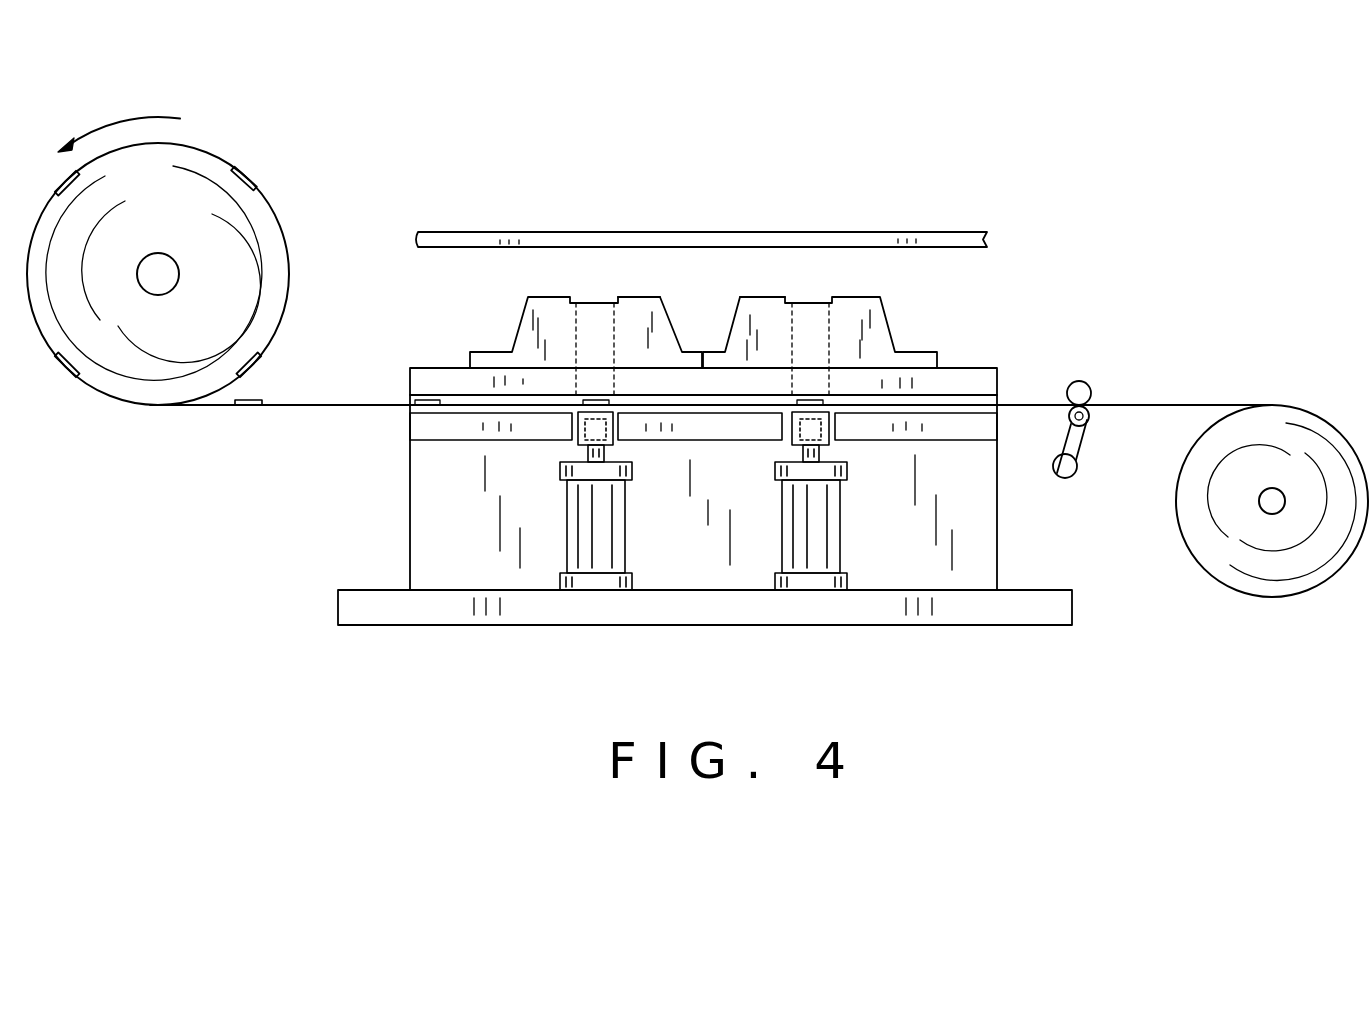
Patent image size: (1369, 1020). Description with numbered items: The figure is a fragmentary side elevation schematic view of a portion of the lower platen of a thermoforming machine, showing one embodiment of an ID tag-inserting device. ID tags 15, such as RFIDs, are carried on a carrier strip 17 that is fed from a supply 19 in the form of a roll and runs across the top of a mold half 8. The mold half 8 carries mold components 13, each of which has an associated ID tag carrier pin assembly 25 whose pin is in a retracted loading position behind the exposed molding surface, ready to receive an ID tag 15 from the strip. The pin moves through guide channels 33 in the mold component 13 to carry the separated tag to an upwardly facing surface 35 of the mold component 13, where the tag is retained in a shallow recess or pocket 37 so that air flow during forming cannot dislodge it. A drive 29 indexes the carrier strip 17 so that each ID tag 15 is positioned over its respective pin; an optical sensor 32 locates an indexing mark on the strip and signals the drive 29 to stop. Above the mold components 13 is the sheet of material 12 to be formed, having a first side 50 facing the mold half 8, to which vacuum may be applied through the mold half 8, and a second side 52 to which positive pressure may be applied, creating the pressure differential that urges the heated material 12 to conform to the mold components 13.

The mold half 8 is at (997, 382).
The material 12 is at (450, 232).
The mold component 13 is at (515, 332).
The ID tag 15 is at (259, 400).
The carrier strip 17 is at (213, 408).
The supply 19 is at (218, 157).
The ID tag carrier pin assembly 25 is at (568, 447).
The drive 29 is at (1216, 573).
The optical sensor 32 is at (1085, 443).
The guide channel 33 is at (578, 326).
The upwardly facing surface 35 is at (748, 297).
The pocket 37 is at (582, 300).
The first side 50 is at (456, 247).
The second side 52 is at (518, 232).